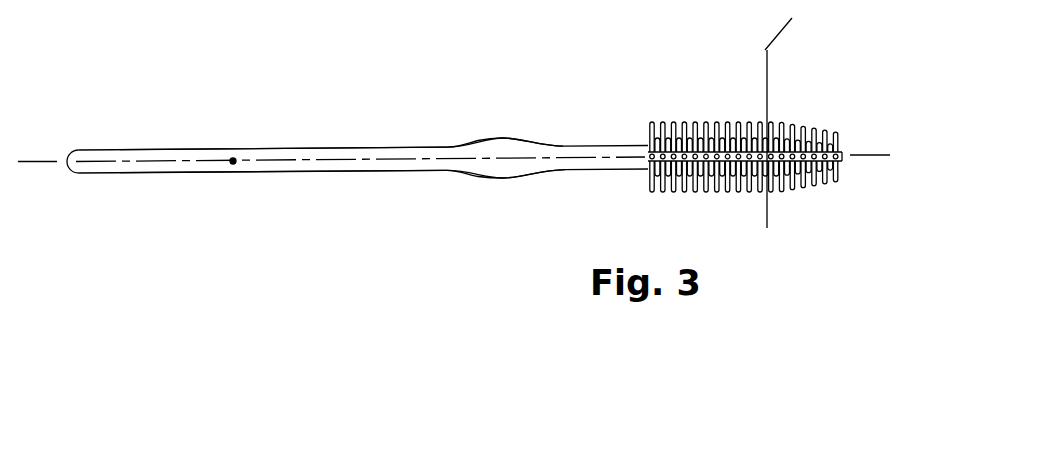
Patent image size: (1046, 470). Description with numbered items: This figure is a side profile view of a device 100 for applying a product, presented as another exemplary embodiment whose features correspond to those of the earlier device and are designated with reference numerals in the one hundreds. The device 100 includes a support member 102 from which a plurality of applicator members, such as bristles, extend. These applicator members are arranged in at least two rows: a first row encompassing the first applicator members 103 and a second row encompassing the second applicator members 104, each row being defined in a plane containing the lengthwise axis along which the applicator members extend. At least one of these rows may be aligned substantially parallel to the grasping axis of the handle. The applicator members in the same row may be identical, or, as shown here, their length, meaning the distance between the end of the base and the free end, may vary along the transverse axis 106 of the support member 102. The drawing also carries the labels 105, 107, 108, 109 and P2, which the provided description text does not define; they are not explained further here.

The device 100 is at (357, 122).
The support member 102 is at (633, 152).
The first applicator members 103 is at (752, 123).
The second applicator members 104 is at (713, 125).
The stem / shaft 105 is at (348, 171).
The transverse axis 106 is at (37, 163).
The pivot point on axis 107 is at (233, 163).
The transition region of stem 108 is at (448, 172).
The enlarged bulge portion of stem 109 is at (517, 173).
The plane P2 is at (766, 63).